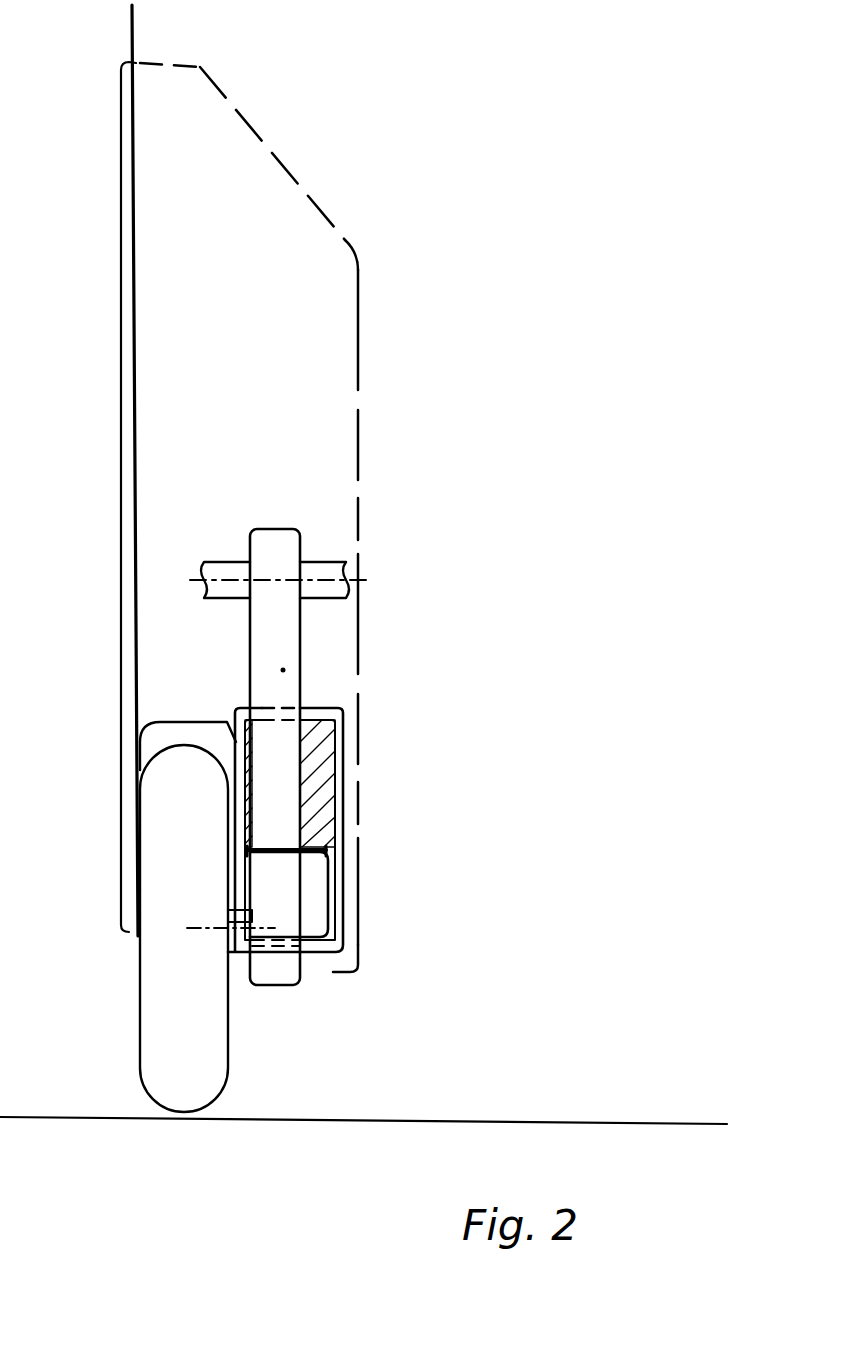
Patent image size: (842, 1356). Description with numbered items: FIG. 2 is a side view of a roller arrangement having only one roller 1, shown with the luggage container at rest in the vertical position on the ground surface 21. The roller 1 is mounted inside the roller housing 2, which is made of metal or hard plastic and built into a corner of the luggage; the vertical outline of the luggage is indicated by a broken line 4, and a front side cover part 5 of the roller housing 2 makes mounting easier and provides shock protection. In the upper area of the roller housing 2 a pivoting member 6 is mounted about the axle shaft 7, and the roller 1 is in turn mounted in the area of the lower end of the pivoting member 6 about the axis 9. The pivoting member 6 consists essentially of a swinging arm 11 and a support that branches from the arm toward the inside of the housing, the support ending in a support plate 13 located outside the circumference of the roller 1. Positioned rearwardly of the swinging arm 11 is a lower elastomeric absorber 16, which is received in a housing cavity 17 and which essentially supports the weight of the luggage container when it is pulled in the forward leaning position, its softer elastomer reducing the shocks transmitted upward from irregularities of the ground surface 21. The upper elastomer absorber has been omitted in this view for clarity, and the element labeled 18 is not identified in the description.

The roller 1 is at (150, 1008).
The roller housing 2 is at (118, 476).
The vertical outline 4 is at (134, 42).
The front side cover part 5 is at (308, 203).
The pivoting member 6 is at (322, 640).
The axle shaft 7 is at (308, 578).
The axis 9 is at (192, 932).
The swinging arm 11 is at (284, 670).
The support plate 13 is at (278, 848).
The elastomeric absorber 16 is at (334, 748).
The housing cavity 17 is at (345, 866).
The fender 18 is at (174, 722).
The ground surface 21 is at (462, 1122).